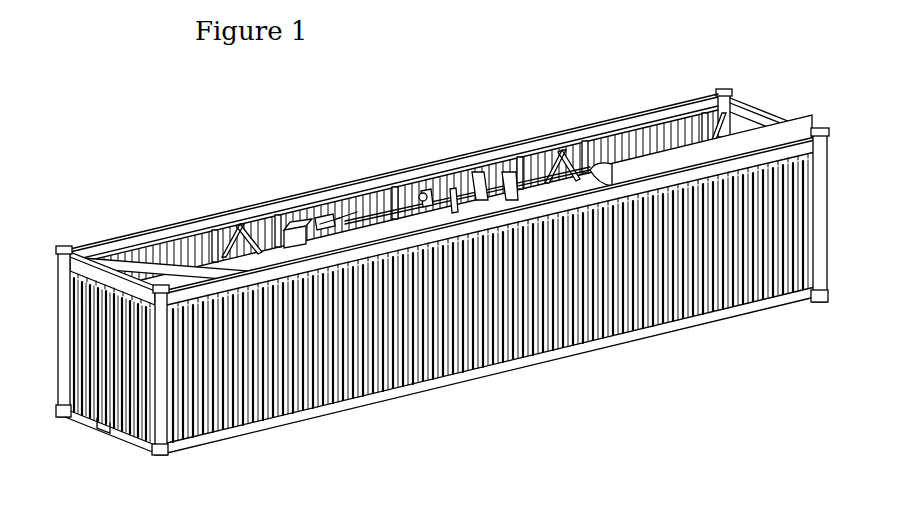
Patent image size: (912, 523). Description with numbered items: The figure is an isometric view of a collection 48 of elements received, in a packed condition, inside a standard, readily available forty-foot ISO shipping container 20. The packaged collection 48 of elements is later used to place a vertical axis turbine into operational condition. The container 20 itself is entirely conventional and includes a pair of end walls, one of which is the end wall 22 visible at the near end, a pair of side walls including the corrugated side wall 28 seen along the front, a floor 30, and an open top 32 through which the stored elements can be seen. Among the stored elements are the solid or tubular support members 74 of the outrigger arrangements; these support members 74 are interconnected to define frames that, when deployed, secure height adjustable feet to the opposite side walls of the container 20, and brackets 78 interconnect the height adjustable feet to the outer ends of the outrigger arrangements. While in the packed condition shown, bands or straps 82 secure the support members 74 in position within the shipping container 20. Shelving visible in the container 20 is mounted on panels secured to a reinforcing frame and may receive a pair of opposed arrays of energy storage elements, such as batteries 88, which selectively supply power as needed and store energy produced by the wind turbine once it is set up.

The shipping container 20 is at (446, 256).
The end wall 22 is at (110, 347).
The side wall 28 is at (342, 368).
The floor 30 is at (118, 428).
The open top 32 is at (613, 128).
The collection of elements 48 is at (643, 145).
The support members 74 is at (512, 173).
The brackets 78 is at (325, 220).
The bands or straps 82 is at (462, 168).
The batteries 88 is at (300, 222).